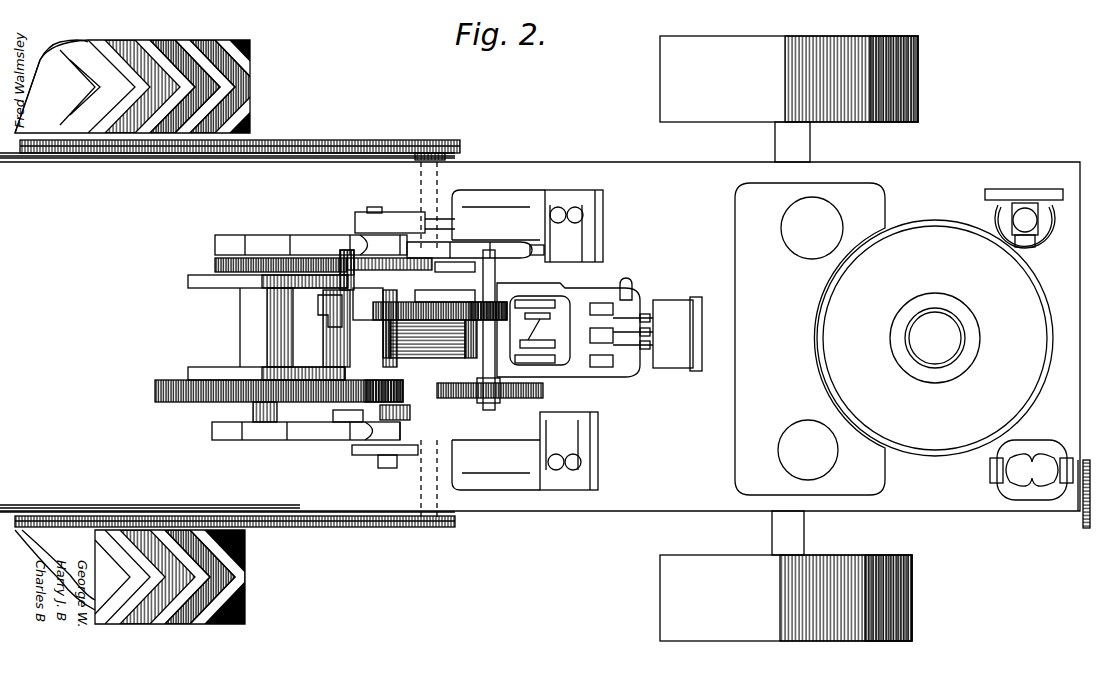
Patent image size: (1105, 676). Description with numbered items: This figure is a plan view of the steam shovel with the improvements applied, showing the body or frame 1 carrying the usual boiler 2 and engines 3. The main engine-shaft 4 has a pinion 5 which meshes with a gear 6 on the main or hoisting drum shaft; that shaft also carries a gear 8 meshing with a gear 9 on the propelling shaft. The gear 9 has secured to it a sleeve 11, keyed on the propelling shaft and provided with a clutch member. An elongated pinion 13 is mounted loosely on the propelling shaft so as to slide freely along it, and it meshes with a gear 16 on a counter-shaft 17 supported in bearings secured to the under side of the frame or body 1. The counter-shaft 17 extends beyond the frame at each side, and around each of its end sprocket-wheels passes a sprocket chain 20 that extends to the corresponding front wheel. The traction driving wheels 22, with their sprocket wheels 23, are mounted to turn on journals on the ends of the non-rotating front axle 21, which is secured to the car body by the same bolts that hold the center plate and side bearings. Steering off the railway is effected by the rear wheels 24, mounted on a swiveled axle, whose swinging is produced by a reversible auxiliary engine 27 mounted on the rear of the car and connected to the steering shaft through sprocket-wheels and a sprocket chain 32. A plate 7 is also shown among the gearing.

The body or frame 1 is at (632, 176).
The boiler 2 is at (918, 247).
The engines 3 is at (568, 185).
The main engine-shaft 4 is at (380, 460).
The pinion 5 is at (385, 388).
The gear 6 is at (160, 384).
The plate 7 is at (255, 412).
The gear 8 is at (213, 265).
The gear 9 is at (345, 262).
The sleeve 11 is at (328, 300).
The elongated pinion 13 is at (325, 346).
The gear 16 is at (470, 365).
The counter-shaft 17 is at (421, 492).
The sprocket chain 20 is at (385, 140).
The front axle 21 is at (105, 512).
The traction driving wheels 22 is at (200, 40).
The sprocket wheels 23 is at (38, 527).
The rear wheels 24 is at (830, 40).
The auxiliary engine 27 is at (1036, 458).
The sprocket chain 32 is at (1080, 514).